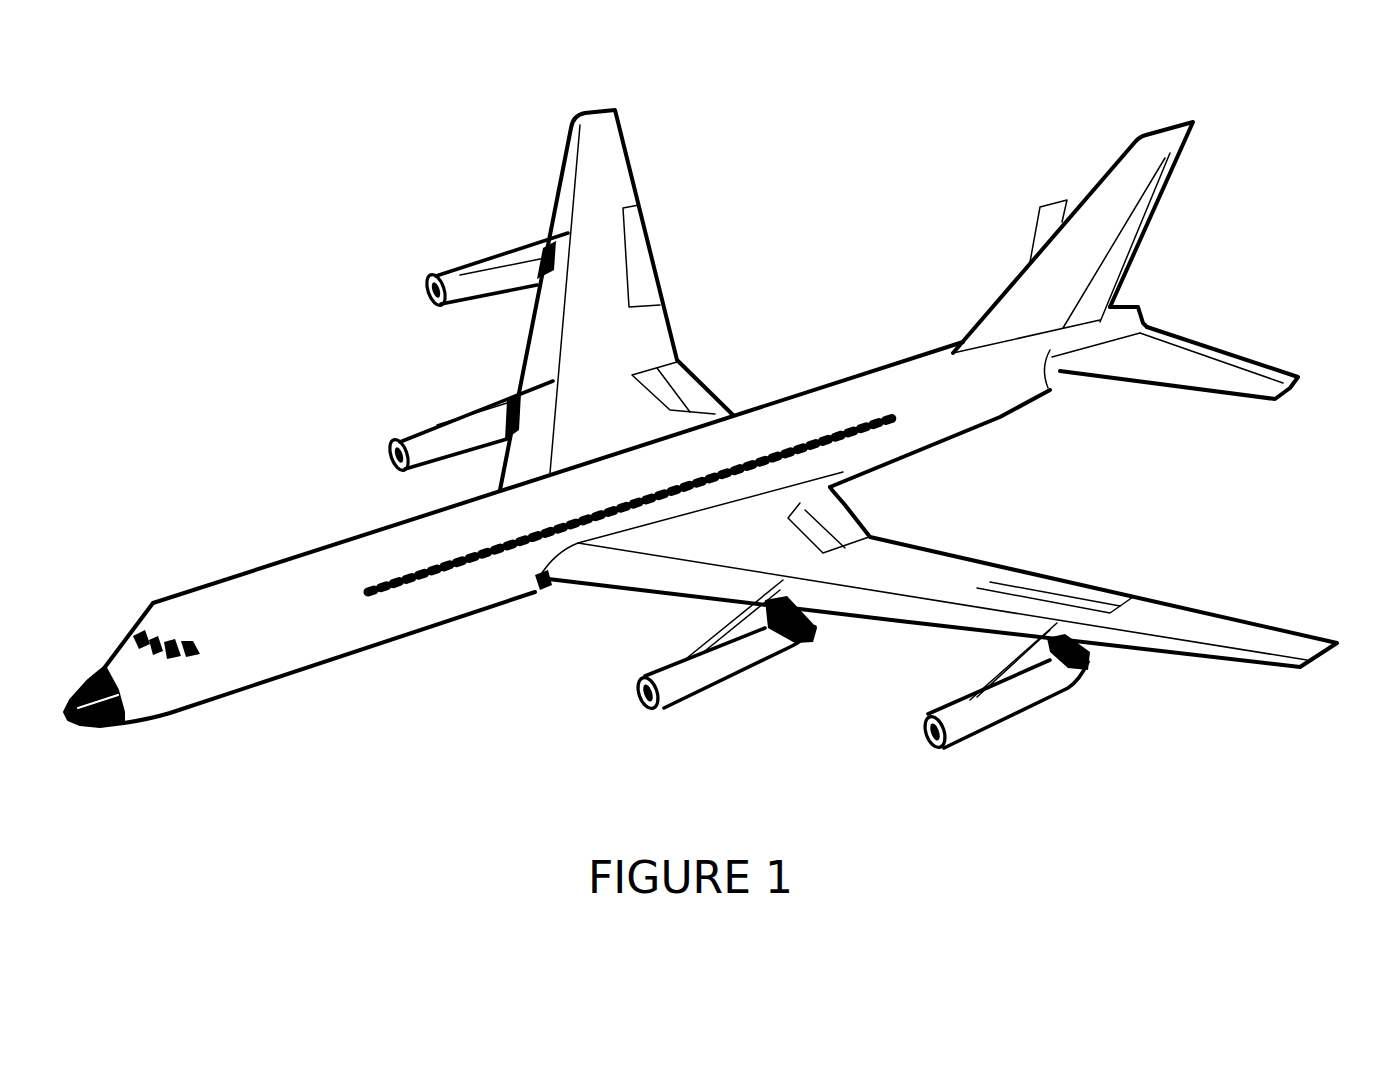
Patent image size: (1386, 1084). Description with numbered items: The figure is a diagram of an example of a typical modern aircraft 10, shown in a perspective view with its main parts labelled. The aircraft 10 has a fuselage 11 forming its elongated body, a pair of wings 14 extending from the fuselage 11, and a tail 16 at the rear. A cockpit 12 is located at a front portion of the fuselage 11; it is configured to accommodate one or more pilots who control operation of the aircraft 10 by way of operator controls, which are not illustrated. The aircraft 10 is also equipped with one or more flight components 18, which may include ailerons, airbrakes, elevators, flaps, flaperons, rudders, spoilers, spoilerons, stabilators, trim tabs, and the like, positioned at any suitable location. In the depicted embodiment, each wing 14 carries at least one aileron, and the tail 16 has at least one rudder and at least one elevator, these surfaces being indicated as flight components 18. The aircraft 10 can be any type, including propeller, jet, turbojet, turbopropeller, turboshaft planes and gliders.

The aircraft 10 is at (155, 205).
The fuselage 11 is at (446, 666).
The cockpit 12 is at (131, 607).
The wings 14 is at (536, 186).
The tail 16 is at (1091, 161).
The flight components 18 is at (714, 371).